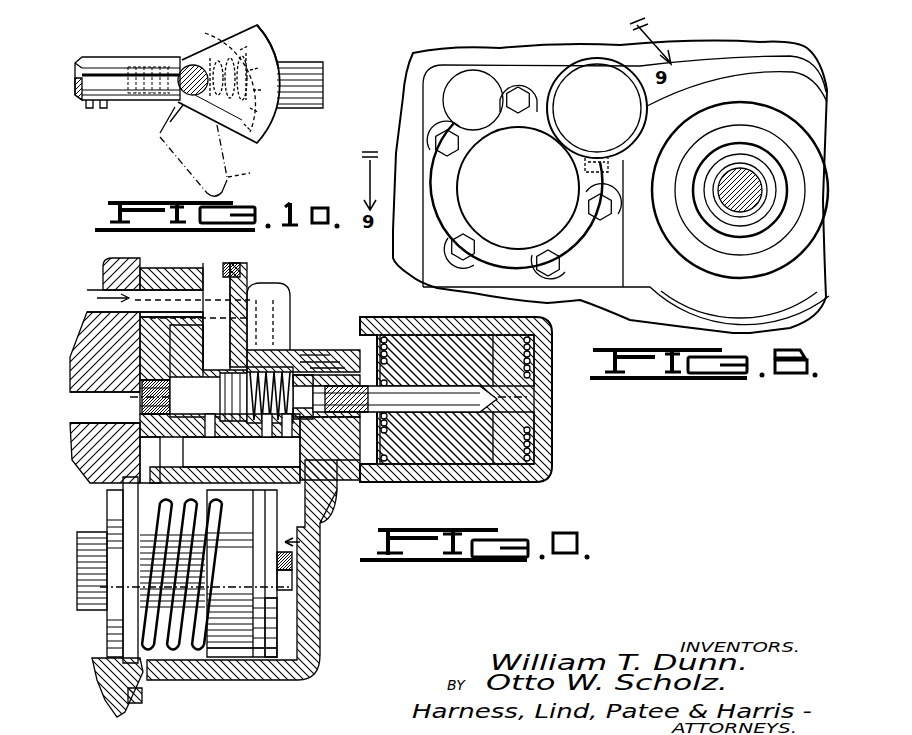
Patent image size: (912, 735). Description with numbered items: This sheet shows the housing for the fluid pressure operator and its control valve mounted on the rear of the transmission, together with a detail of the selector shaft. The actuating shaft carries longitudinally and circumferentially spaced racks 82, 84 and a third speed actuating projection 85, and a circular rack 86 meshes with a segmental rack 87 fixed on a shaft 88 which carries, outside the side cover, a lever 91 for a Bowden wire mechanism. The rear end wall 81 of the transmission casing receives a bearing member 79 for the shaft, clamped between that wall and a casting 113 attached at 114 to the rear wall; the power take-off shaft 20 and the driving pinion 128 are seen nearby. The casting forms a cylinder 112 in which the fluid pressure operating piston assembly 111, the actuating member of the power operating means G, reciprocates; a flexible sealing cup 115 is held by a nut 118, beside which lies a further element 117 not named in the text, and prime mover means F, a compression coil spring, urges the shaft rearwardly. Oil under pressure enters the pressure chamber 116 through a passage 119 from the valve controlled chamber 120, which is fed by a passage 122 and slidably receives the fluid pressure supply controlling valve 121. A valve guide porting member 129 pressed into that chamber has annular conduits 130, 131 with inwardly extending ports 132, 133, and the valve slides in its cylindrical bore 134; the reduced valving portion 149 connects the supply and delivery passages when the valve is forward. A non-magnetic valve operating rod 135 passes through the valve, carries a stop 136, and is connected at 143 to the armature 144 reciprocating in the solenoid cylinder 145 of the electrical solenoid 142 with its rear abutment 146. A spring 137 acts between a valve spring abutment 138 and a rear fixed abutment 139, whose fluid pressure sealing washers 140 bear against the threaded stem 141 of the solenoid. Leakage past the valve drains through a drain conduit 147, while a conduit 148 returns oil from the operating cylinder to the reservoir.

In FIG. 10, the rack 82 is at (140, 68).
In FIG. 10, the rack 84 is at (89, 109).
In FIG. 10, the third speed actuating projection 85 is at (233, 60).
In FIG. 10, the circular rack 86 is at (300, 66).
In FIG. 9, the circular rack 86 is at (78, 570).
In FIG. 10, the segmental rack 87 is at (262, 28).
In FIG. 10, the shaft 88 is at (178, 117).
In FIG. 10, the lever 91 is at (250, 180).
In FIG. 8, the rear end wall 81 is at (582, 277).
In FIG. 8, the drain conduit 147 is at (655, 38).
In FIG. 9, the drain conduit 147 is at (290, 302).
In FIG. 8, the casting 113 is at (564, 224).
In FIG. 9, the casting 113 is at (308, 345).
In FIG. 8, the attachment 114 is at (507, 98).
In FIG. 8, the power take-off shaft 20 is at (753, 175).
In FIG. 9, the driving pinion 128 is at (115, 265).
In FIG. 9, the passage 122 is at (247, 281).
In FIG. 9, the fluid pressure supply controlling valve 121 is at (138, 388).
In FIG. 9, the stop 136 is at (92, 410).
In FIG. 9, the conduit 148 is at (70, 418).
In FIG. 9, the valve controlled chamber 120 is at (135, 442).
In FIG. 9, the valve guide porting member 129 is at (140, 360).
In FIG. 9, the annular conduit 131 is at (147, 333).
In FIG. 9, the annular conduit 130 is at (207, 383).
In FIG. 9, the reduced valving portion 149 is at (212, 372).
In FIG. 9, the port 133 is at (226, 436).
In FIG. 9, the valve operating rod 135 is at (295, 350).
In FIG. 9, the rear fixed abutment 139 is at (302, 354).
In FIG. 9, the cylindrical bore 134 is at (190, 440).
In FIG. 9, the port 132 is at (215, 440).
In FIG. 9, the spring 137 is at (267, 438).
In FIG. 9, the valve spring abutment 138 is at (288, 447).
In FIG. 9, the electrical solenoid 142 is at (440, 480).
In FIG. 9, the threaded stem 141 is at (372, 484).
In FIG. 9, the fluid pressure sealing washers 140 is at (436, 399).
In FIG. 9, the armature 144 is at (488, 360).
In FIG. 9, the solenoid cylinder 145 is at (486, 388).
In FIG. 9, the connection 143 is at (385, 395).
In FIG. 9, the rear abutment 146 is at (550, 402).
In FIG. 9, the cylinder 112 is at (213, 683).
In FIG. 9, the bearing member 79 is at (128, 503).
In FIG. 9, the prime mover means F is at (200, 524).
In FIG. 9, the fluid pressure operating piston assembly 111 is at (240, 608).
In FIG. 9, the flange 117 is at (291, 562).
In FIG. 9, the nut 118 is at (291, 584).
In FIG. 9, the pressure chamber 116 is at (290, 628).
In FIG. 9, the flexible sealing cup 115 is at (267, 650).
In FIG. 9, the power operating means G is at (300, 542).
In FIG. 9, the passage 119 is at (303, 500).